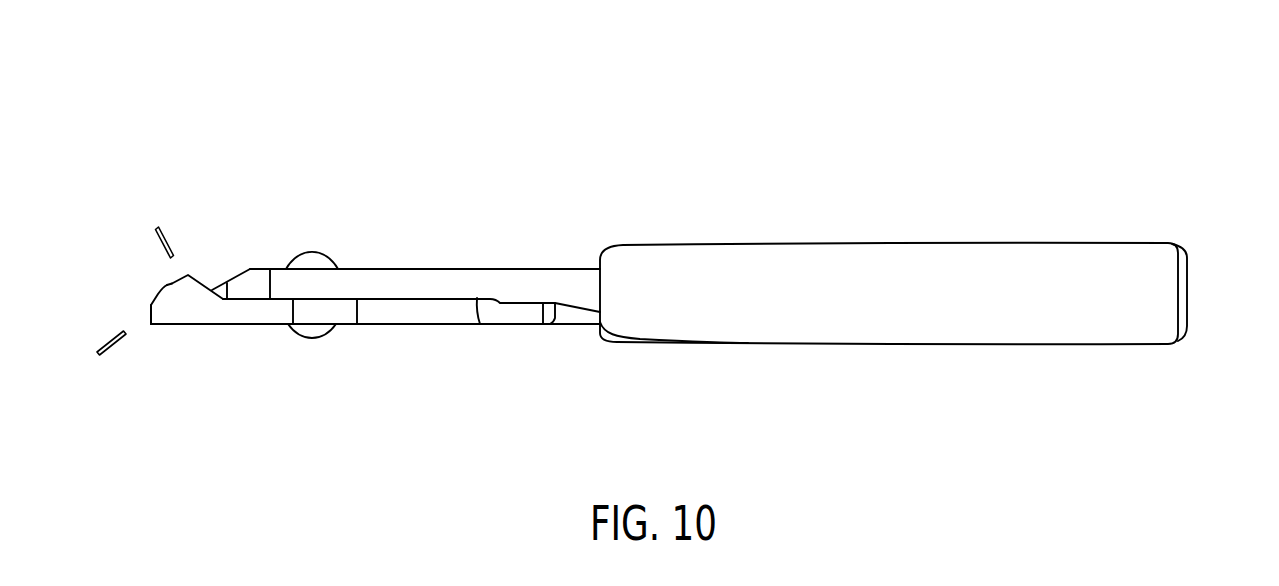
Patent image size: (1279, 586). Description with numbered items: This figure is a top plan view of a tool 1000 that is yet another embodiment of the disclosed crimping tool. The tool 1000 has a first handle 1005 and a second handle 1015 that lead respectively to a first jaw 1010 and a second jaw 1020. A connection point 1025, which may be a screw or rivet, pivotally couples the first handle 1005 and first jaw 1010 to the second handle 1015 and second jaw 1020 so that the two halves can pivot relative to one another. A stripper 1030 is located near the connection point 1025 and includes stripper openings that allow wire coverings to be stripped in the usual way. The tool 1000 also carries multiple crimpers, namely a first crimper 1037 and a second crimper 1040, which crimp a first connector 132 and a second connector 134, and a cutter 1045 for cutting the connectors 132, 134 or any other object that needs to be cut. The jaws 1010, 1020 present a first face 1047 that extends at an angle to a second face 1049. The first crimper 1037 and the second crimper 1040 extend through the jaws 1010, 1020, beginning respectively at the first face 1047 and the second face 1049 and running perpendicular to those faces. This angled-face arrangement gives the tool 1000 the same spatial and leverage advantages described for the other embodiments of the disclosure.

The tool 1000 is at (1031, 99).
The first handle 1005 is at (960, 335).
The first jaw 1010 is at (257, 275).
The second handle 1015 is at (1190, 282).
The second jaw 1020 is at (168, 318).
The connection point 1025 is at (322, 263).
The stripper 1030 is at (500, 315).
The first crimper 1037 is at (172, 284).
The second crimper 1040 is at (151, 305).
The cutter 1045 is at (277, 318).
The first face 1047 is at (188, 275).
The second face 1049 is at (148, 310).
The first connector 132 is at (113, 346).
The second connector 134 is at (158, 228).